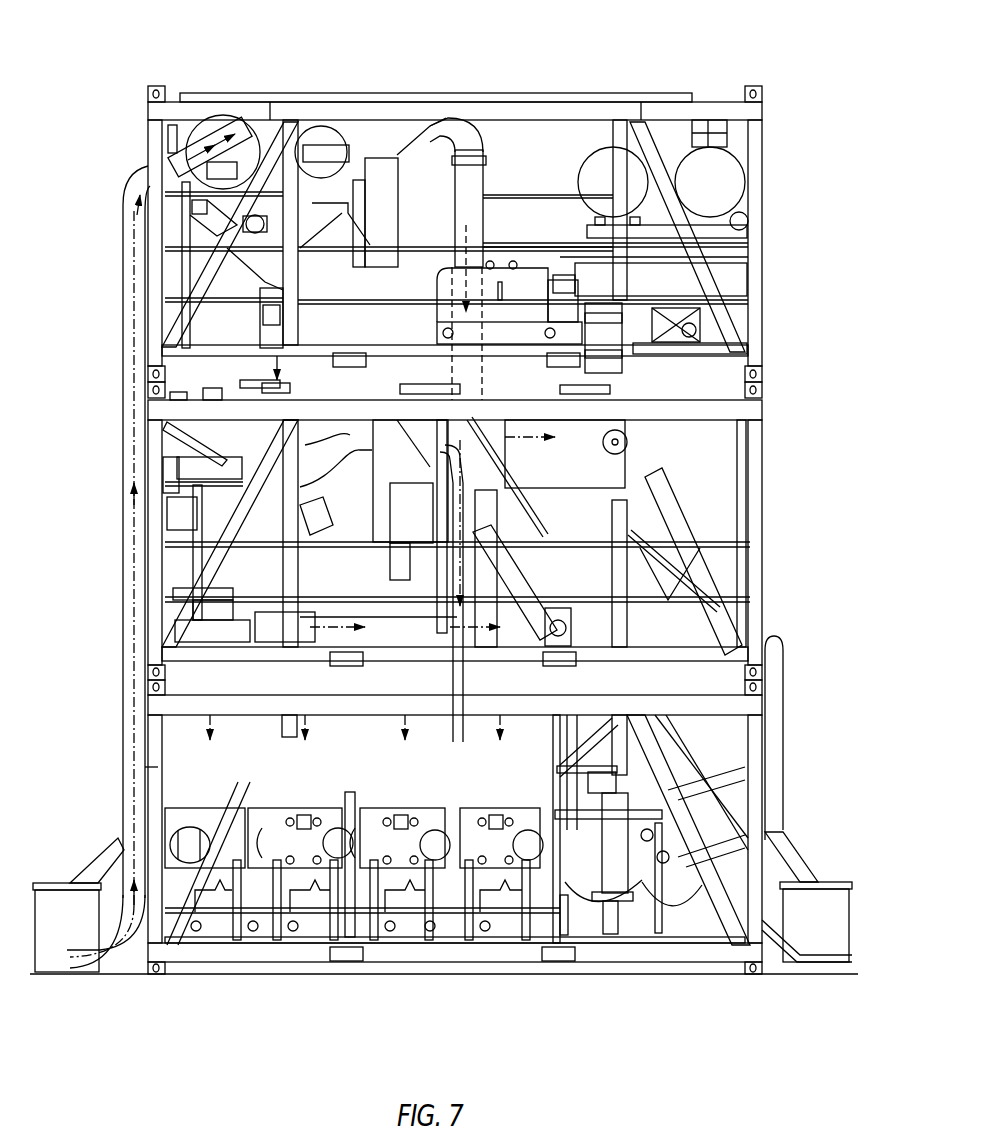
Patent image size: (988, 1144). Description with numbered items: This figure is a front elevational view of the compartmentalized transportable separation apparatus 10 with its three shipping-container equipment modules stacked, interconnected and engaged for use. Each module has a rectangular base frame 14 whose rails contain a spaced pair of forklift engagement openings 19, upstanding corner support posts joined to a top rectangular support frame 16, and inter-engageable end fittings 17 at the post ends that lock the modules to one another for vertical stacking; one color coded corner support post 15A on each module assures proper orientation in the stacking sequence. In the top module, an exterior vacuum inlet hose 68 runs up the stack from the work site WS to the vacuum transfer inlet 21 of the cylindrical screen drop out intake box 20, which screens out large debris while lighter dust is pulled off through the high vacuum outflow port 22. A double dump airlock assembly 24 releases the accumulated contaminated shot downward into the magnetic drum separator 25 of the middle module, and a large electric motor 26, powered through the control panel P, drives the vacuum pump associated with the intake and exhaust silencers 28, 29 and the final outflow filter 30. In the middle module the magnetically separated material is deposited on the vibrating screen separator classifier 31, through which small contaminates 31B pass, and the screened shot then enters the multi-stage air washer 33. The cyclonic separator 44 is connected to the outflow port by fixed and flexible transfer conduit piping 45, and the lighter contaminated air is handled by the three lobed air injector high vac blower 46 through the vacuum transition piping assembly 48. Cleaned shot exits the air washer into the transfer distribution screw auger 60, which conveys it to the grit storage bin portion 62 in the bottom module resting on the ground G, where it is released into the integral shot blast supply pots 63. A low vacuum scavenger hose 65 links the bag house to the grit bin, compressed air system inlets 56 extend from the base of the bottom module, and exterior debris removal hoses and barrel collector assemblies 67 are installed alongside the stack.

The separation apparatus 10 is at (148, 62).
The rectangular base frame 14 is at (510, 961).
The color coded corner support post 15A is at (757, 348).
The top rectangular support frame 16 is at (523, 100).
The inter-engageable end fitting 17 is at (770, 92).
The forklift engagement openings 19 is at (343, 960).
The cylindrical screen drop out intake box 20 is at (353, 132).
The vacuum transfer inlet 21 is at (245, 127).
The high vacuum outflow port 22 is at (398, 133).
The double dump airlock assembly 24 is at (248, 318).
The magnetic drum separator 25 is at (253, 432).
The large electric motor 26 is at (283, 383).
The intake silencer 28 is at (598, 167).
The exhaust silencer 29 is at (738, 172).
The final outflow filter 30 is at (677, 280).
The vibrating screen separator classifier 31 is at (222, 510).
The small contaminates 31B is at (333, 527).
The multi-stage air washer 33 is at (177, 532).
The cyclonic separator 44 is at (560, 455).
The transfer conduit piping 45 is at (478, 210).
The three lobed air injector high vac blower 46 is at (717, 467).
The vacuum transition piping assembly 48 is at (579, 335).
The compressed air system inlet 56 is at (798, 960).
The transfer distribution screw auger 60 is at (232, 630).
The grit storage bin portion 62 is at (158, 767).
The shot blast supply pots 63 is at (297, 887).
The low vacuum scavenger hose 65 is at (452, 680).
The exterior debris removal hoses and barrel collector assemblies 67 is at (57, 882).
The exterior vacuum inlet hose 68 is at (125, 617).
The control panel P is at (378, 228).
The work site WS is at (67, 927).
The ground G is at (119, 977).